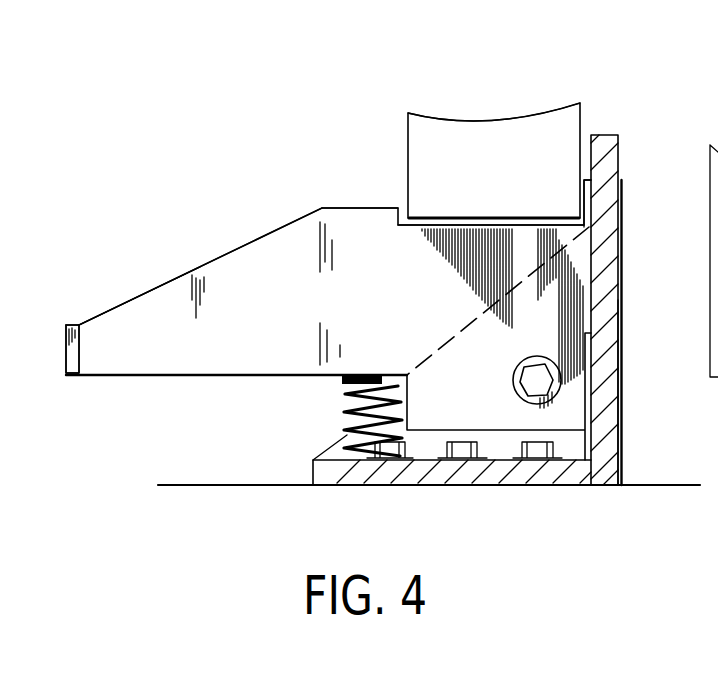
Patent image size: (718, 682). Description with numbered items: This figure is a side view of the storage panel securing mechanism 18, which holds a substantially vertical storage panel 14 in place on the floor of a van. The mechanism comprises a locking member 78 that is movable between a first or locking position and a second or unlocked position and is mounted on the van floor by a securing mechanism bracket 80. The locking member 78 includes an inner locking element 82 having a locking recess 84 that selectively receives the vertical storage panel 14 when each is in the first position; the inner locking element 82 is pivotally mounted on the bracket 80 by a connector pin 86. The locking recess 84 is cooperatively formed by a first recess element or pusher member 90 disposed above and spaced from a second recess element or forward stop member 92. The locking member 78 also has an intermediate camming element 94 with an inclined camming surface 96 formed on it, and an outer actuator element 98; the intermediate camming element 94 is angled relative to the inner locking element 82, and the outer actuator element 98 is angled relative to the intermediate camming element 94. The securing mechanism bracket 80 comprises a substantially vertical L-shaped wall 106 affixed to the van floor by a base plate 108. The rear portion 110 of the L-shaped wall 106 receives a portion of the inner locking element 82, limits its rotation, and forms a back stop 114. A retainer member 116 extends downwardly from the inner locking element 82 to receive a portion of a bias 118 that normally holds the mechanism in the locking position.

The substantially vertical storage panel 14 is at (465, 99).
The storage panel securing mechanism 18 is at (277, 135).
The locking member 78 is at (262, 207).
The securing mechanism bracket 80 is at (560, 513).
The inner locking element 82 is at (396, 155).
The locking recess 84 is at (515, 195).
The connector pin 86 is at (548, 364).
The first recess element or pusher member 90 is at (620, 185).
The second recess element or forward stop member 92 is at (359, 208).
The intermediate camming element 94 is at (134, 261).
The inclined camming surface 96 is at (131, 297).
The outer actuator element 98 is at (92, 347).
The substantially vertical L-shaped wall 106 is at (631, 438).
The base plate 108 is at (506, 487).
The rear portion 110 is at (621, 393).
The back stop 114 is at (591, 148).
The retainer member 116 is at (365, 380).
The bias 118 is at (343, 408).